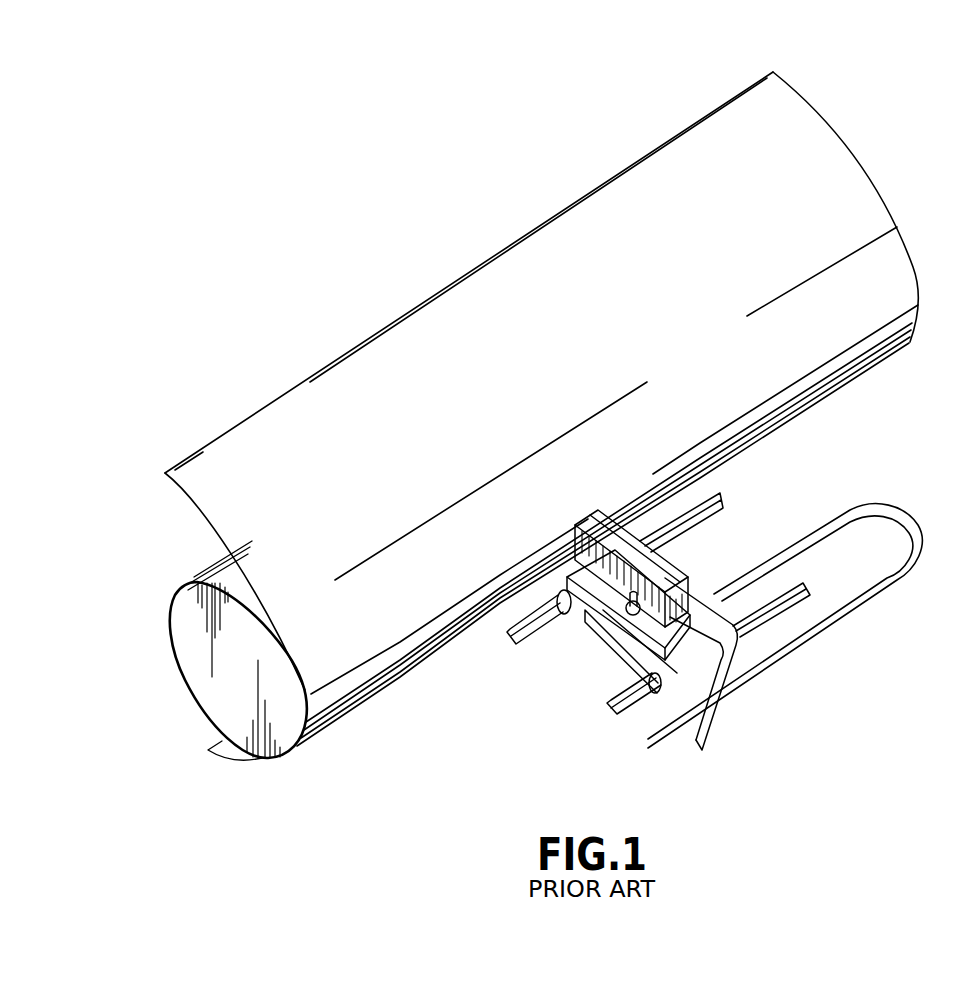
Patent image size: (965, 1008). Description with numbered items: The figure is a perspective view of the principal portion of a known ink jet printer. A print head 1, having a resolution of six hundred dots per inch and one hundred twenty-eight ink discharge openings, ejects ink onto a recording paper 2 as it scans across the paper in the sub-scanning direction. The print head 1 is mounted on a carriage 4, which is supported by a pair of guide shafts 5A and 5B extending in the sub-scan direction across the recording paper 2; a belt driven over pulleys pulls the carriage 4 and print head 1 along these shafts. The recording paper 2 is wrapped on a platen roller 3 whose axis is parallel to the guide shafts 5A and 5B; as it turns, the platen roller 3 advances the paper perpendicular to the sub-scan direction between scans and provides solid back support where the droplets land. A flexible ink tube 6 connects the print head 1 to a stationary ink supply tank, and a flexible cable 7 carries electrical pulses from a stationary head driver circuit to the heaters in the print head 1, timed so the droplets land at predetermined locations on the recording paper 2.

The print head 1 is at (603, 511).
The recording paper 2 is at (256, 436).
The platen roller 3 is at (193, 675).
The carriage 4 is at (597, 623).
The guide shaft 5A is at (533, 632).
The guide shaft 5B is at (637, 698).
The flexible ink tube 6 is at (807, 648).
The flexible cable 7 is at (697, 599).